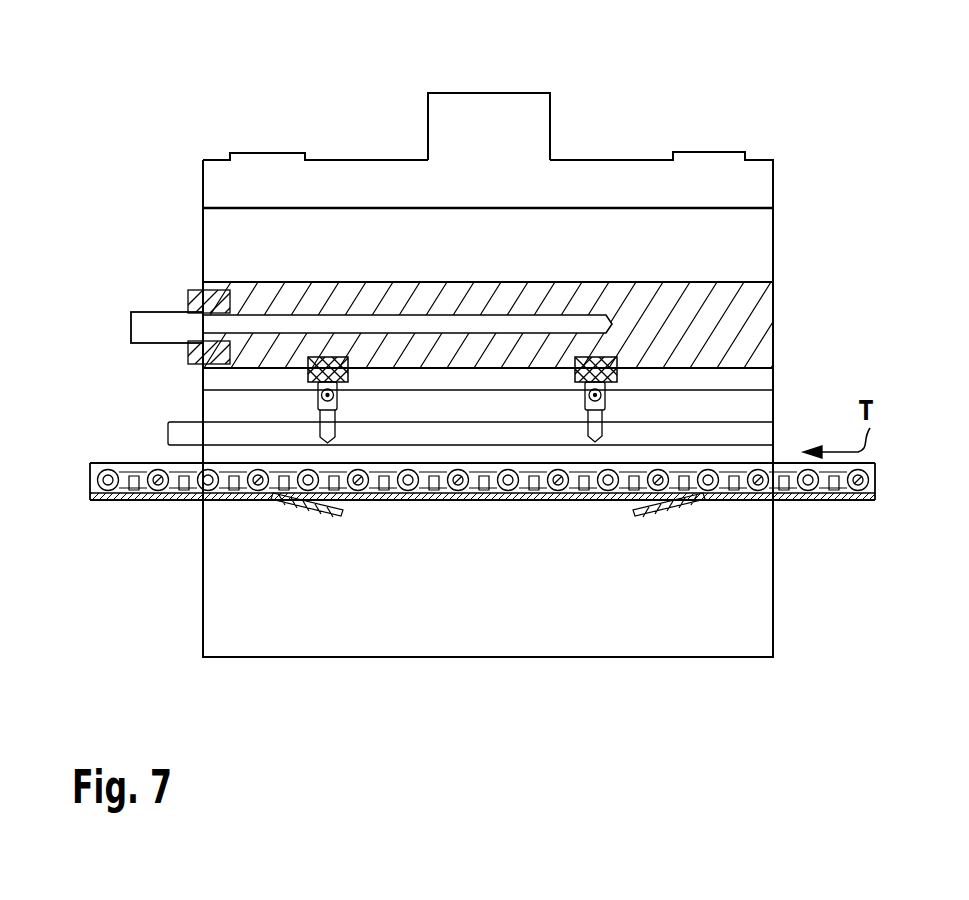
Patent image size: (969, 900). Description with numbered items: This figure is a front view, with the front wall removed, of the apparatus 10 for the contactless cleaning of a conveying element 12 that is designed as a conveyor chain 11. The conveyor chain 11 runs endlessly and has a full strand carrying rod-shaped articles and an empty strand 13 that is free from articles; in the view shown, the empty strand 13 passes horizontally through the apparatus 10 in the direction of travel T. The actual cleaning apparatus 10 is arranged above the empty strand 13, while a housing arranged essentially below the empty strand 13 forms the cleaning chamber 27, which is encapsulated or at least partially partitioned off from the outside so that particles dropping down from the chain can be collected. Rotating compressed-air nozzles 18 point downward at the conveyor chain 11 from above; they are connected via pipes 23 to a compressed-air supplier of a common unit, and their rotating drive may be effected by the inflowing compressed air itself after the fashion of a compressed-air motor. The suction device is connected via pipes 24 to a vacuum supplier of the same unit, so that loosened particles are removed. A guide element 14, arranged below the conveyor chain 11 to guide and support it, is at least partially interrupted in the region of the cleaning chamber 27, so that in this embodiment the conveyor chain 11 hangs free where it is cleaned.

The apparatus 10 is at (762, 118).
The conveyor chain 11 is at (790, 468).
The conveying element 12 is at (436, 495).
The empty strand 13 is at (454, 533).
The guide element 14 is at (812, 500).
The compressed-air nozzle 18 is at (333, 413).
The pipes 23 is at (170, 325).
The pipes 24 is at (485, 115).
The cleaning chamber 27 is at (598, 638).